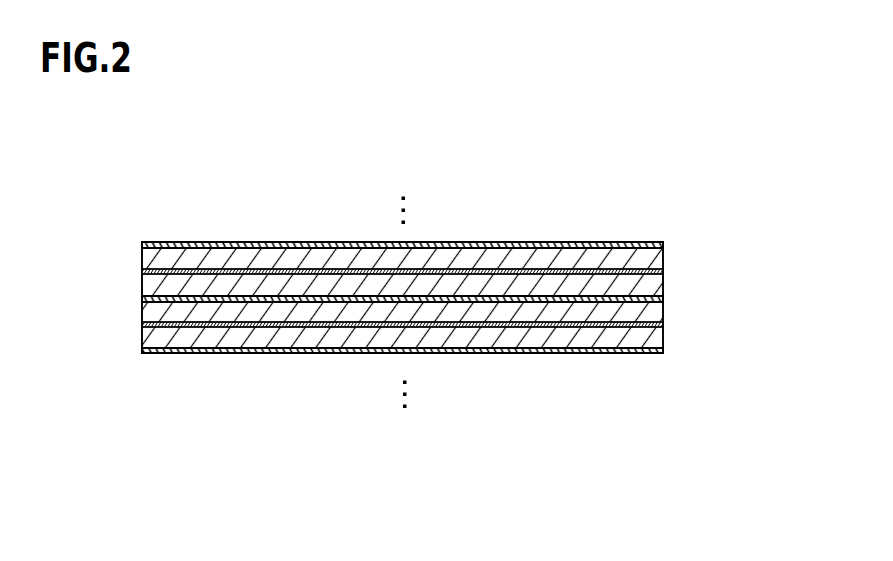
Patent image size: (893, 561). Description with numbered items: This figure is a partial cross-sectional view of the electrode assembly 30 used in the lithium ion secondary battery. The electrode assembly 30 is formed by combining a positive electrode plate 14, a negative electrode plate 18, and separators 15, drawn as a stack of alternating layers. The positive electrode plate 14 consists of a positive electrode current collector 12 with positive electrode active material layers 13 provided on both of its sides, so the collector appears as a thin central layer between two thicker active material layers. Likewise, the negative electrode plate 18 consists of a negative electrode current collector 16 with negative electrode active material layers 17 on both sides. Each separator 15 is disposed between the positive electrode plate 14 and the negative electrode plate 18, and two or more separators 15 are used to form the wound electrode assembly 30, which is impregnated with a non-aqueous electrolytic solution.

The positive electrode current collector 12 is at (312, 272).
The positive electrode active material layers 13 is at (250, 287).
The positive electrode plate 14 is at (378, 152).
The separator 15 is at (663, 245).
The negative electrode current collector 16 is at (233, 322).
The negative electrode active material layers 17 is at (172, 333).
The negative electrode plate 18 is at (323, 455).
The electrode assembly 30 is at (563, 150).